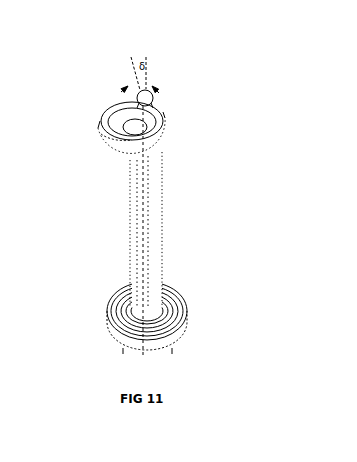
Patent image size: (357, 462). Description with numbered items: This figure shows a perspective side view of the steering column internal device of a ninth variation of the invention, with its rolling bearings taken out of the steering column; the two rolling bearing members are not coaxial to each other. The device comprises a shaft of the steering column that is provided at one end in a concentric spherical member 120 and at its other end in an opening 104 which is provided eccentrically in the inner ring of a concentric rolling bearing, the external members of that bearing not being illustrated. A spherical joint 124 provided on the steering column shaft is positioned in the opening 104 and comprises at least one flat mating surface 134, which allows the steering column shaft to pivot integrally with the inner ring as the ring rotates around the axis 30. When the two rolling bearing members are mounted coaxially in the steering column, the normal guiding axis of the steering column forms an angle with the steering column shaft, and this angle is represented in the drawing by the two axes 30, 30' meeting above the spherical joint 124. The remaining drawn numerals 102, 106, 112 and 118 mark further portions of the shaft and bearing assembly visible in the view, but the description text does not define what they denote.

The axis 30 is at (118, 73).
The axis 30' is at (160, 73).
The shaft 102 is at (100, 224).
The opening 104 is at (168, 127).
The collar body 106 is at (182, 141).
The collar lower portion 112 is at (100, 146).
The inner bore 118 is at (167, 232).
The concentric spherical member 120 is at (190, 317).
The spherical joint 124 is at (161, 118).
The flat mating surface 134 is at (135, 135).